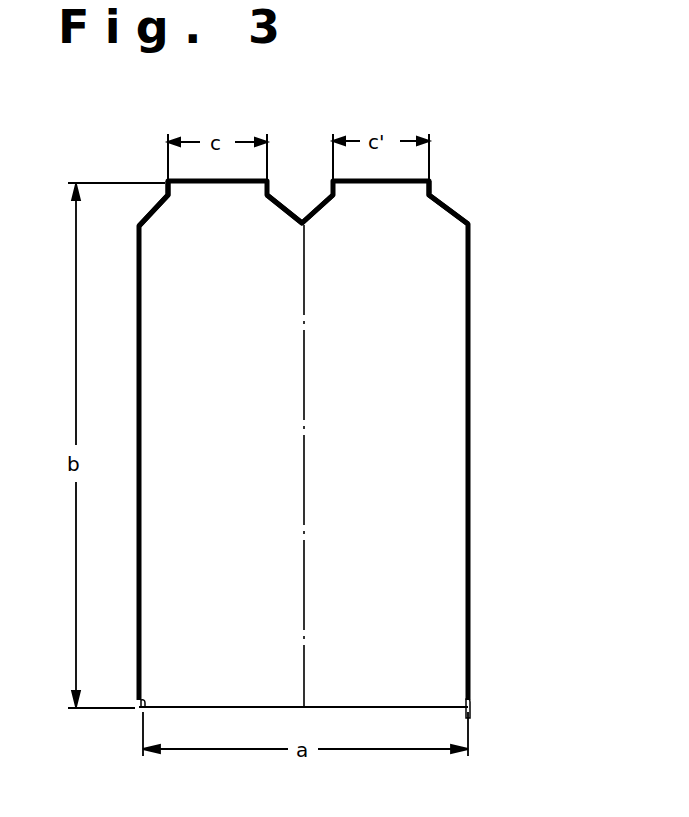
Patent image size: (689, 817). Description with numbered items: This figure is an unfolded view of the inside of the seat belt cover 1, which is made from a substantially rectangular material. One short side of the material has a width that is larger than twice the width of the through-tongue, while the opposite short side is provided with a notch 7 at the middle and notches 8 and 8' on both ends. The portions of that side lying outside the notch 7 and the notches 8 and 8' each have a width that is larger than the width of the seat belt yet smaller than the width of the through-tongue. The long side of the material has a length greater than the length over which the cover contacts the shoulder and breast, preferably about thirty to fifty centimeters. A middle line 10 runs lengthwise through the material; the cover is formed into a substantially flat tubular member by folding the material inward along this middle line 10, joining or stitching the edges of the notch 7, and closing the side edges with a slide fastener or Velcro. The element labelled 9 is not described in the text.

The seat belt cover 1 is at (422, 438).
The notch 7 is at (305, 197).
The notch 8 is at (137, 169).
The notch 8' is at (498, 193).
The bottom 9 is at (393, 708).
The middle line 10 is at (306, 587).